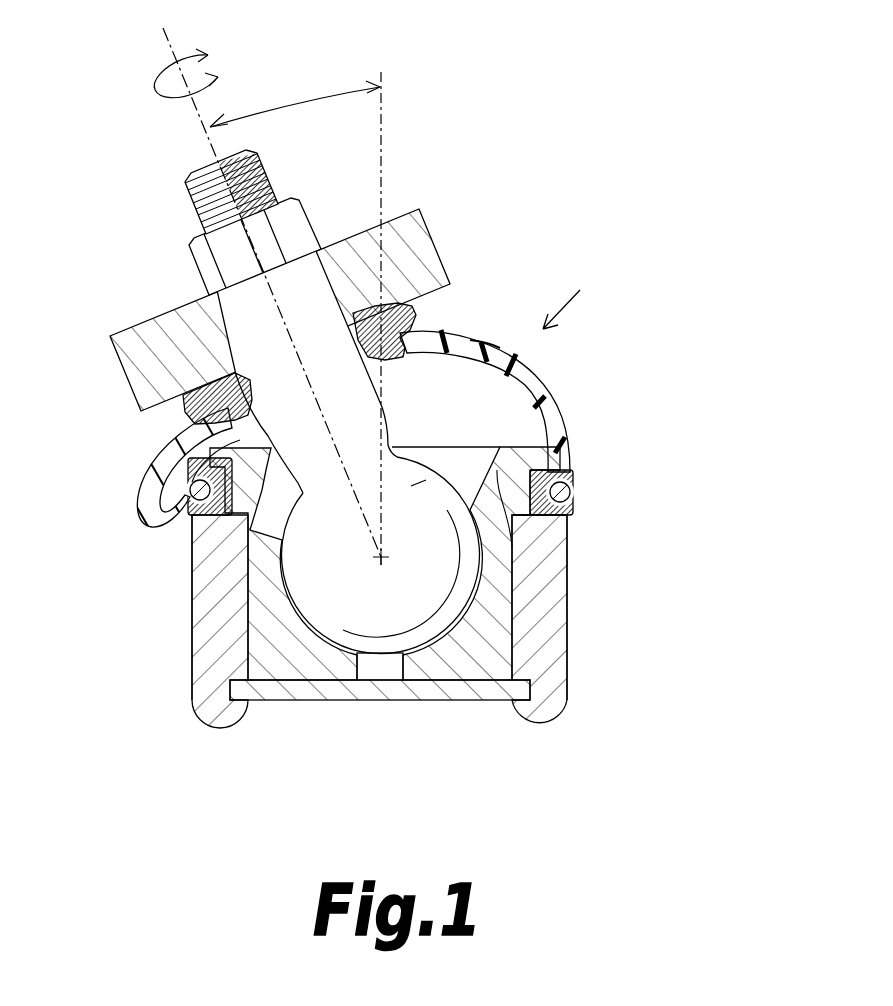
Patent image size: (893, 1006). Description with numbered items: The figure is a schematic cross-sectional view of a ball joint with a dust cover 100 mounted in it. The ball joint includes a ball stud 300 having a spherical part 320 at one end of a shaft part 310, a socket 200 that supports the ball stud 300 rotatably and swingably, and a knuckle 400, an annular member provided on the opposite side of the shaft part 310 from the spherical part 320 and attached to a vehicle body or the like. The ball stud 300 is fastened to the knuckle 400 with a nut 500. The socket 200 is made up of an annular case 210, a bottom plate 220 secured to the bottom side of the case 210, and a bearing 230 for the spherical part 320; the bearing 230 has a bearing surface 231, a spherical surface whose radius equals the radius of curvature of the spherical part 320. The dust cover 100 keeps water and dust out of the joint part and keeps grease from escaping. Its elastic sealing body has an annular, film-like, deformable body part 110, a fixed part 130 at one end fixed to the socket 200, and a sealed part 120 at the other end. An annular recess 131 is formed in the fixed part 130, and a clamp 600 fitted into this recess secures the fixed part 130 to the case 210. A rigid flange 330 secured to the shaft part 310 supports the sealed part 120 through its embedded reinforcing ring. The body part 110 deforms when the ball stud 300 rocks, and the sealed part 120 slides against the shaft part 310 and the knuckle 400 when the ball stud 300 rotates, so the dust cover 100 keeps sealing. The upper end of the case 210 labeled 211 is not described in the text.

The dust cover 100 is at (626, 298).
The body part 110 is at (480, 337).
The sealed part 120 is at (420, 305).
The fixed part 130 is at (573, 503).
The annular recess 131 is at (190, 497).
The socket 200 is at (597, 650).
The case 210 is at (563, 608).
The upper end of housing 211 is at (567, 520).
The bottom plate 220 is at (425, 693).
The bearing 230 is at (277, 627).
The bearing surface 231 is at (298, 613).
The ball stud 300 is at (407, 409).
The shaft part 310 is at (241, 332).
The spherical part 320 is at (430, 603).
The flange 330 is at (395, 380).
The knuckle 400 is at (423, 233).
The nut 500 is at (197, 262).
The clamp 600 is at (567, 485).